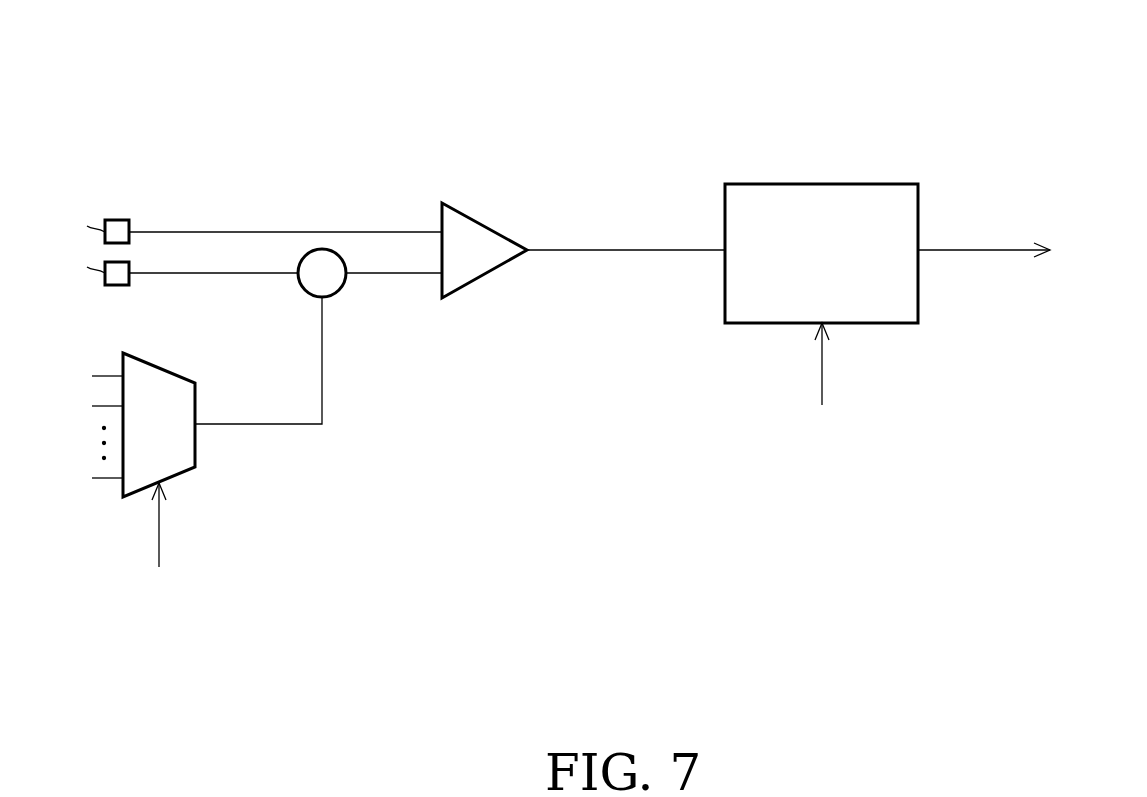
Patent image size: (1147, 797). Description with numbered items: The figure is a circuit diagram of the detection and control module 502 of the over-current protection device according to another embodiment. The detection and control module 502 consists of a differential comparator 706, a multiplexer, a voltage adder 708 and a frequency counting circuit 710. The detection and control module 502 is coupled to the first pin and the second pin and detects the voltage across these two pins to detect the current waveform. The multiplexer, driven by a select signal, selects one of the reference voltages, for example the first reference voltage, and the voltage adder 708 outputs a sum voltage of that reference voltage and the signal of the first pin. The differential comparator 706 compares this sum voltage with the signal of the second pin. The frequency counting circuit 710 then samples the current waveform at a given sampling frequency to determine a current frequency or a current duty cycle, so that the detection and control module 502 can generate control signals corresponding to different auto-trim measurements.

The detection and control module 502 is at (1032, 126).
The differential comparator 706 is at (490, 224).
The voltage adder 708 is at (338, 294).
The frequency counting circuit 710 is at (817, 184).